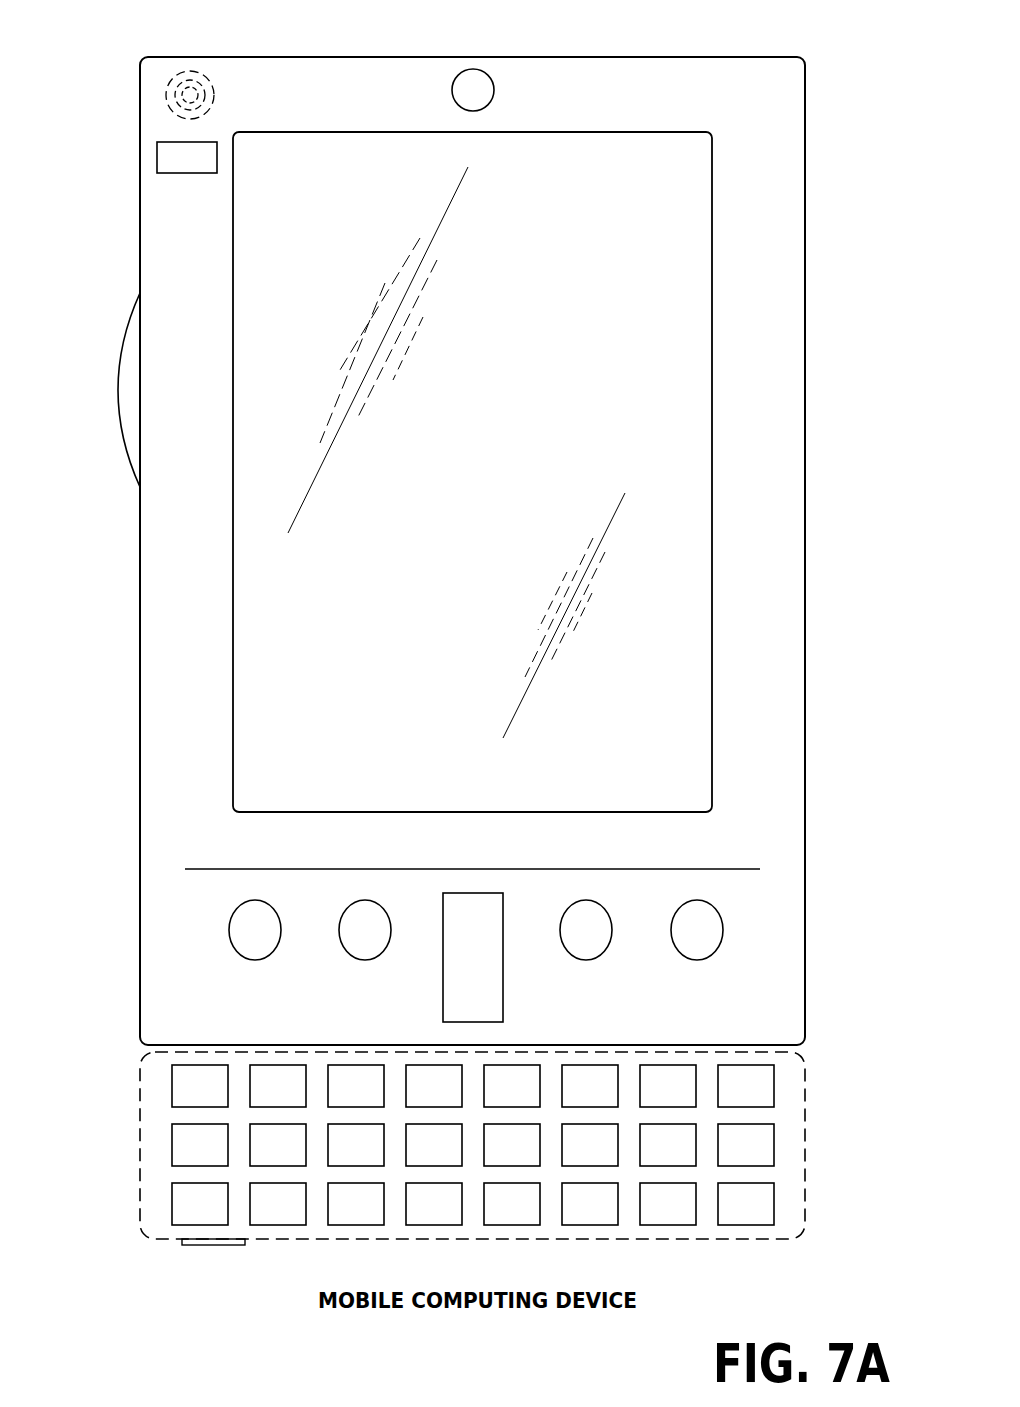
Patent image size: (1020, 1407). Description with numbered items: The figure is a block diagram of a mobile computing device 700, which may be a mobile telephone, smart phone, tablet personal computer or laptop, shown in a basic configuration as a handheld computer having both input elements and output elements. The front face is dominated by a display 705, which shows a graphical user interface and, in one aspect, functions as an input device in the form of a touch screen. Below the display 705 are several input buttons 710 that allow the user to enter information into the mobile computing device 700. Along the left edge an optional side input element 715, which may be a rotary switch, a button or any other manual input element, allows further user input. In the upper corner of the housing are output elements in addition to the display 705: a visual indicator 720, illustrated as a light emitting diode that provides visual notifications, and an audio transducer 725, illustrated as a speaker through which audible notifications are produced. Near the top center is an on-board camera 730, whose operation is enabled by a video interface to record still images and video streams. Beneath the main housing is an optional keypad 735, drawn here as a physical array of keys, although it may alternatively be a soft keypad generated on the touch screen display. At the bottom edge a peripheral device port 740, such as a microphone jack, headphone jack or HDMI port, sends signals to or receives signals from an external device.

The mobile computing device 700 is at (770, 57).
The display 705 is at (257, 647).
The input buttons 710 is at (257, 961).
The side input element 715 is at (118, 392).
The visual indicator 720 is at (157, 156).
The audio transducer 725 is at (160, 96).
The on-board camera 730 is at (473, 70).
The keypad 735 is at (150, 1145).
The peripheral device port 740 is at (190, 1247).